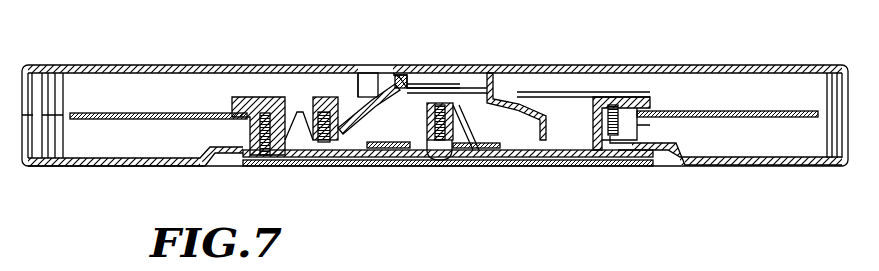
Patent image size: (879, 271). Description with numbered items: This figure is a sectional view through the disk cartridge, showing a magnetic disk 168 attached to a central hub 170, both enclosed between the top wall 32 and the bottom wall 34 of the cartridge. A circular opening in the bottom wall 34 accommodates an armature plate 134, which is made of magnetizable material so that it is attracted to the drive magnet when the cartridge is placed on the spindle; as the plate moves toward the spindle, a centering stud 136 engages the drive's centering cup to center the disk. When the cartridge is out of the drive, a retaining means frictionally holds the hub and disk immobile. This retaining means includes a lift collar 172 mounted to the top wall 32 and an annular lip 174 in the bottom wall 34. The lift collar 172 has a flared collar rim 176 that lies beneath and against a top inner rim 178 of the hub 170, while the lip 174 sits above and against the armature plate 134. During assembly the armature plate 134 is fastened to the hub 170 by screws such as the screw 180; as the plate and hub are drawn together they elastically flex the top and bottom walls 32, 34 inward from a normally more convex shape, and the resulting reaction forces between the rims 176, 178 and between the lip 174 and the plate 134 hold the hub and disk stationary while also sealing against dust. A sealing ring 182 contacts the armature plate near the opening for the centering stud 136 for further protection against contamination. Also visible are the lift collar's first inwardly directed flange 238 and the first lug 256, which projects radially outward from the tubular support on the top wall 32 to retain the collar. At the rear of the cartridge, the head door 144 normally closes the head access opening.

The top wall 32 is at (635, 66).
The bottom wall 34 is at (745, 165).
The head door 144 is at (48, 95).
The magnetic disk 168 is at (178, 112).
The central hub 170 is at (650, 98).
The lift collar 172 is at (443, 95).
The annular lip 174 is at (225, 145).
The flared collar rim 176 is at (362, 97).
The top inner rim 178 is at (512, 117).
The screw 180 is at (262, 162).
The sealing ring 182 is at (450, 160).
The armature plate 134 is at (567, 160).
The centering stud 136 is at (437, 157).
The first flange 238 is at (390, 80).
The first lug 256 is at (410, 78).